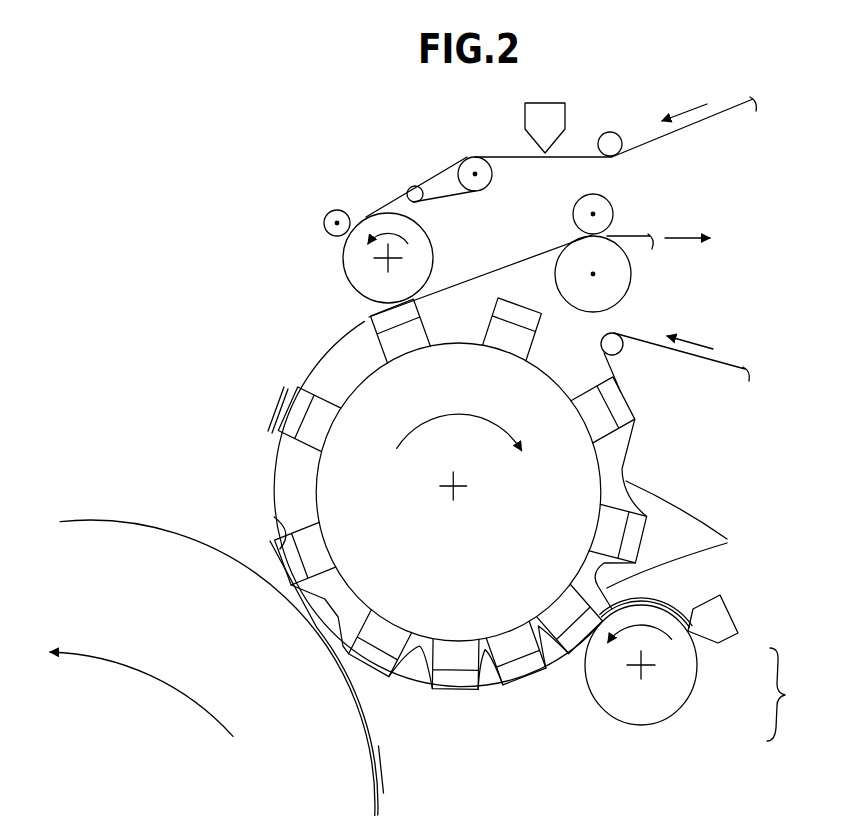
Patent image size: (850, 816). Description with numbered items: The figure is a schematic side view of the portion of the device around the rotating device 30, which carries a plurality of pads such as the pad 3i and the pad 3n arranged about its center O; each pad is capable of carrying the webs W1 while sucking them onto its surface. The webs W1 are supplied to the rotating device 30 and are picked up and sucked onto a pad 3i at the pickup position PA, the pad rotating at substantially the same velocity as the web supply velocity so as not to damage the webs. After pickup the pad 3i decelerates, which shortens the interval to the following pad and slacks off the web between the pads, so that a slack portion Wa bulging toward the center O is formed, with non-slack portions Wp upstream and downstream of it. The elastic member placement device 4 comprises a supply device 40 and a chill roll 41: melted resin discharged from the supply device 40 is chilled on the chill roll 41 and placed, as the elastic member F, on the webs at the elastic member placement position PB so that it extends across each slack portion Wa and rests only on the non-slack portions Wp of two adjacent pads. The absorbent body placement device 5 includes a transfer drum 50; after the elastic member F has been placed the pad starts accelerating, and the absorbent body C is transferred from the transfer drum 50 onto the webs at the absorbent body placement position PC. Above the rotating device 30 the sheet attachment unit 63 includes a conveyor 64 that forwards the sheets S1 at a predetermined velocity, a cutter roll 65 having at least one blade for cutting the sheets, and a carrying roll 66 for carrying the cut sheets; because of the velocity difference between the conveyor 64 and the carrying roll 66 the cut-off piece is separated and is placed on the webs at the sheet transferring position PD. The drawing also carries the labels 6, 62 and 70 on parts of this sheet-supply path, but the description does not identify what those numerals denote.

The feeding device 6 is at (413, 165).
The hopper 62 is at (525, 113).
The sheet attachment unit 63 is at (343, 247).
The conveyor 64 is at (492, 173).
The cutter roll 65 is at (337, 209).
The carrying roll 66 is at (348, 272).
The nip rollers 70 is at (603, 203).
The rotating device 30 is at (273, 402).
The absorbent body placement device 5 is at (142, 513).
The transfer drum 50 is at (88, 520).
The supply device 40 is at (717, 640).
The chill roll 41 is at (687, 700).
The elastic member placement device 4 is at (784, 694).
The pad 3n is at (325, 430).
The pad 3i is at (585, 425).
The center of the rotating device O is at (453, 485).
The sheet S1 is at (720, 113).
The web W1 is at (703, 363).
The slack portion Wa is at (493, 267).
The non-slack portion Wp is at (632, 398).
The elastic member F is at (650, 602).
The absorbent body C is at (273, 417).
The pickup position PA is at (638, 407).
The elastic member placement position PB is at (573, 664).
The absorbent body placement position PC is at (260, 553).
The sheet transferring position PD is at (358, 307).